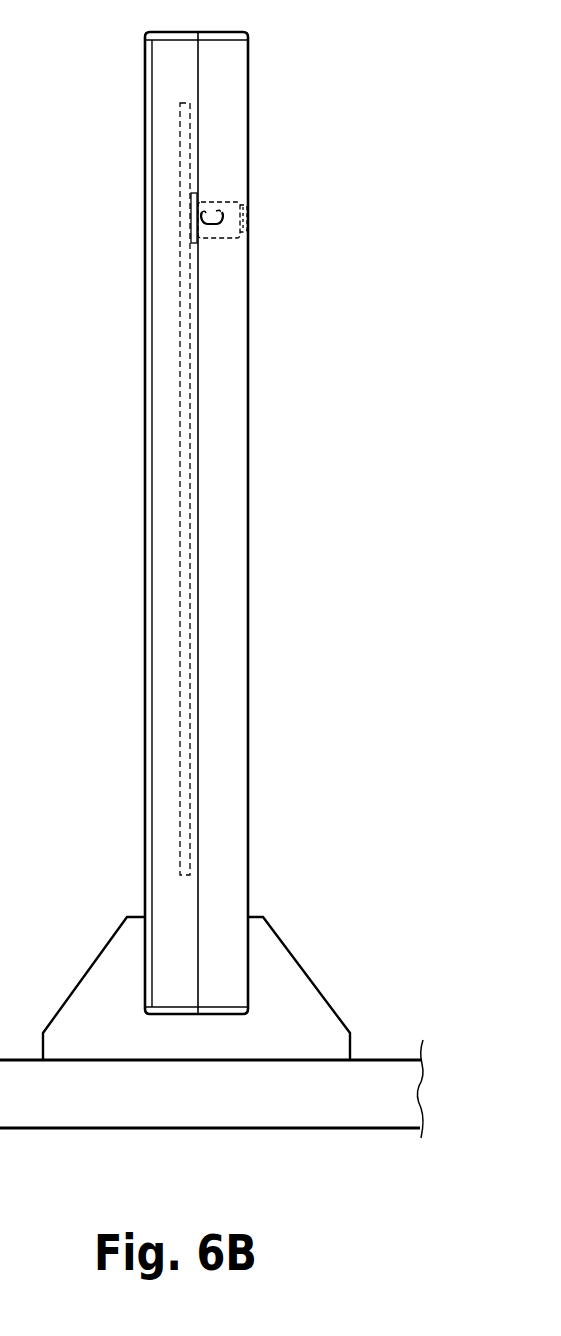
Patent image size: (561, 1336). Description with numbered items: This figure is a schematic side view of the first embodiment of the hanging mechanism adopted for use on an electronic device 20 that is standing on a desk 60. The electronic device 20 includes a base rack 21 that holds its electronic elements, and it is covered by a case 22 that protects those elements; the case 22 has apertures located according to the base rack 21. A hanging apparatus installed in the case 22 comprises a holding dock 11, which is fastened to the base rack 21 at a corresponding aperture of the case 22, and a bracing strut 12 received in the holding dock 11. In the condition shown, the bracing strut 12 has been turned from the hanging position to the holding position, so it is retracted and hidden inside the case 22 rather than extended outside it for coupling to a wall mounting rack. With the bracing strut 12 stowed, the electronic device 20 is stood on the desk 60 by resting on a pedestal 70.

The holding dock 11 is at (217, 202).
The bracing strut 12 is at (247, 217).
The electronic device 20 is at (143, 70).
The base rack 21 is at (182, 167).
The case 22 is at (248, 102).
The desk 60 is at (343, 1105).
The pedestal 70 is at (290, 990).